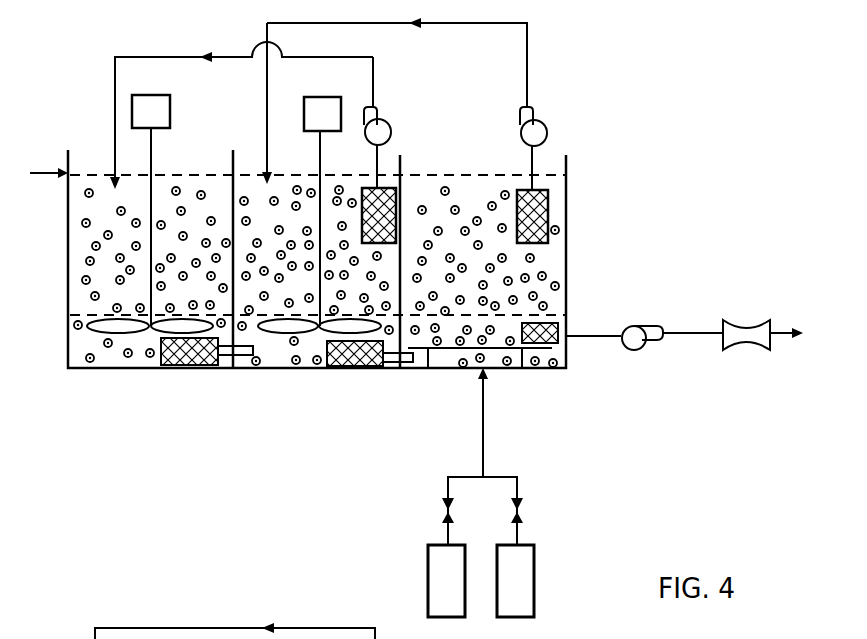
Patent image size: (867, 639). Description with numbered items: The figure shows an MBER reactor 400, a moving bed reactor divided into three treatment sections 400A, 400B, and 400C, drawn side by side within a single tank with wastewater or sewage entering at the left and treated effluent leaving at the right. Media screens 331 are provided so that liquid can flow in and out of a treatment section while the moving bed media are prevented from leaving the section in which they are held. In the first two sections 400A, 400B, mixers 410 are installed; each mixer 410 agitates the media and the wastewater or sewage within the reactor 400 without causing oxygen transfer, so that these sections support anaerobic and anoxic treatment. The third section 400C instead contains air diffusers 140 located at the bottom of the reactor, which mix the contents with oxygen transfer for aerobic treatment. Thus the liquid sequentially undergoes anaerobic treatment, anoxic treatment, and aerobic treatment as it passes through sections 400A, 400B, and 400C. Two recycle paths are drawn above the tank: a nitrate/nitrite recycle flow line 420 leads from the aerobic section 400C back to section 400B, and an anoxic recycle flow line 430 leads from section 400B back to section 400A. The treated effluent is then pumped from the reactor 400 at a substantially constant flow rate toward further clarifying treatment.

The MBER reactor 400 is at (570, 172).
The treatment section 400A is at (152, 367).
The treatment section 400B is at (350, 371).
The treatment section 400C is at (517, 374).
The mixer 410 is at (153, 163).
The media screen 331 is at (528, 192).
The nitrate/nitrite recycle flow line 420 is at (528, 77).
The anoxic recycle flow line 430 is at (108, 70).
The air diffuser 140 is at (448, 347).